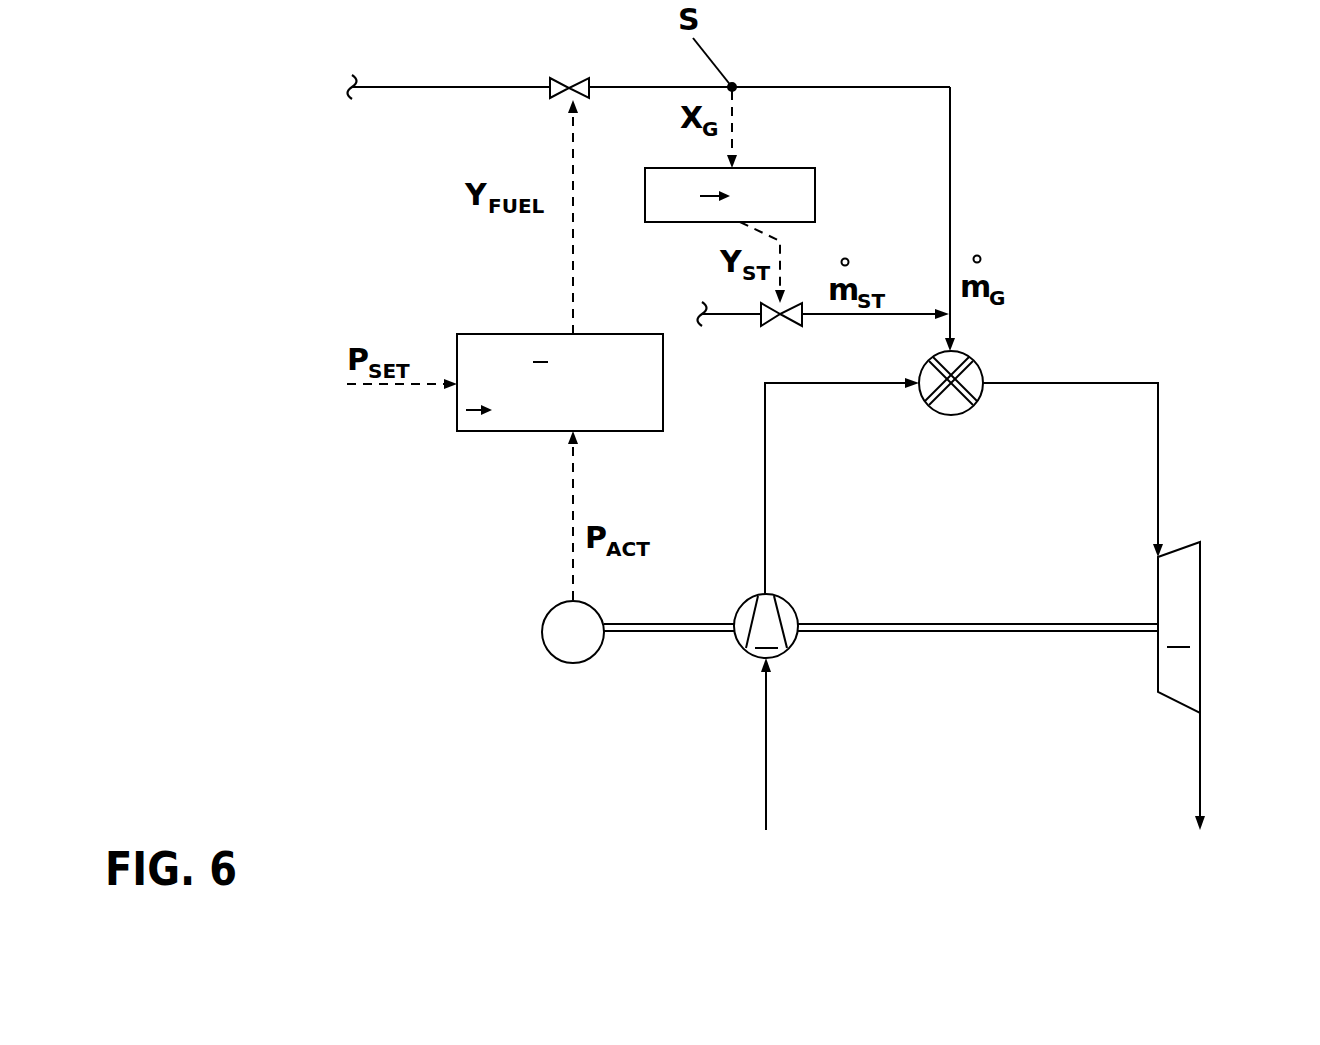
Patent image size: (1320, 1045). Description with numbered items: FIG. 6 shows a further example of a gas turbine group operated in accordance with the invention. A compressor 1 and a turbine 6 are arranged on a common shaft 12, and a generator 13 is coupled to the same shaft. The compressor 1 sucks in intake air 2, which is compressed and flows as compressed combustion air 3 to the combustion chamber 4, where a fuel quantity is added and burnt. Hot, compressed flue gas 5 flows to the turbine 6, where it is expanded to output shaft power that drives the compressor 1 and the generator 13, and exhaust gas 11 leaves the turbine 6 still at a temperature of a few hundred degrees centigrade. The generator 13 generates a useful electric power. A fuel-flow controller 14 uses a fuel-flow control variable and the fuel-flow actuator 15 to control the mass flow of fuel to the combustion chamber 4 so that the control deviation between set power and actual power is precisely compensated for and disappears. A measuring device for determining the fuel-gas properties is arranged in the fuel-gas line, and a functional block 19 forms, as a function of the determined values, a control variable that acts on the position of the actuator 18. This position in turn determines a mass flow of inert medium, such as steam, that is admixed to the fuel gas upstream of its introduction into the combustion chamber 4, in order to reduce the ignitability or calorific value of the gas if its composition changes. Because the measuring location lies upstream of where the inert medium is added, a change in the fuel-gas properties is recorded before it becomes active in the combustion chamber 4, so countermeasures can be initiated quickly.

The compressor 1 is at (766, 626).
The intake air 2 is at (766, 723).
The compressed combustion air 3 is at (883, 384).
The combustion chamber 4 is at (951, 415).
The compressed flue gas 5 is at (1027, 384).
The turbine 6 is at (1179, 627).
The exhaust gas 11 is at (1200, 740).
The shaft 12 is at (1034, 632).
The generator 13 is at (573, 663).
The fuel-flow controller 14 is at (650, 430).
The fuel-flow actuator 15 is at (570, 78).
The actuator 18 is at (763, 327).
The functional block 19 is at (800, 168).